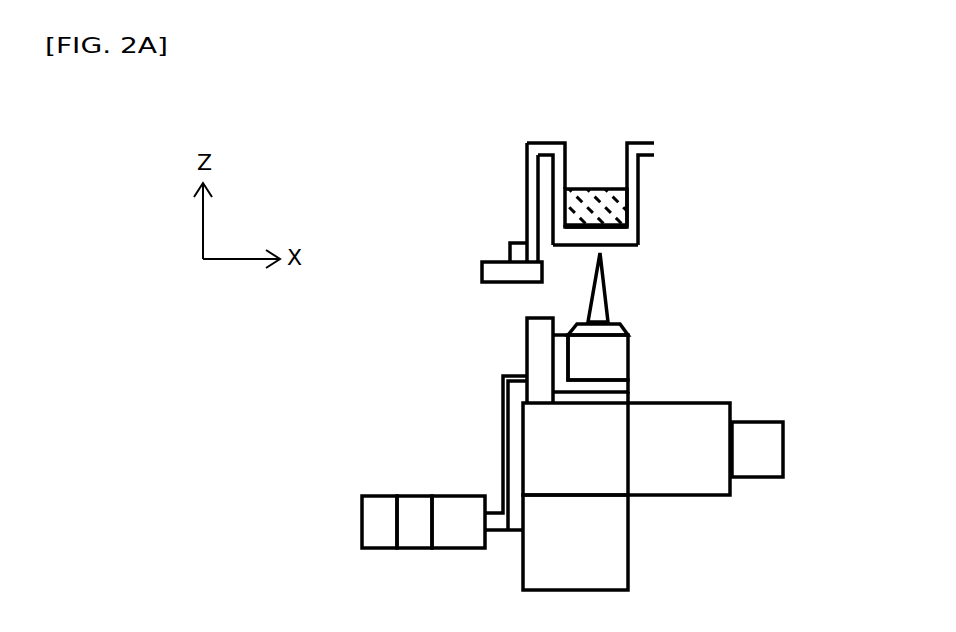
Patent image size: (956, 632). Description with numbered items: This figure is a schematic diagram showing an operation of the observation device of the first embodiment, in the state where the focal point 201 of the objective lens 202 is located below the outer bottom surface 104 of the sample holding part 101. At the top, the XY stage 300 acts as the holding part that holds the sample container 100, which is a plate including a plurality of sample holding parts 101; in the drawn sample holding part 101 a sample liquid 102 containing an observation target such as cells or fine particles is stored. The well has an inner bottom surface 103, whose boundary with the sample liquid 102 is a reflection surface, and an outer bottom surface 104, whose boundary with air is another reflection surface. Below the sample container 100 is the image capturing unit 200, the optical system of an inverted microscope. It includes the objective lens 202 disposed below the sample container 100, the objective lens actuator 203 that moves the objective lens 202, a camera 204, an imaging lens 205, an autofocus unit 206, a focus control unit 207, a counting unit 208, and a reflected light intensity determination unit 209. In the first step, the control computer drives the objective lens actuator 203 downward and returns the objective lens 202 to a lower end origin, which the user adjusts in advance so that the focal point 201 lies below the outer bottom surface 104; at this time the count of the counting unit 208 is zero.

The sample container 100 is at (517, 252).
The sample holding part 101 is at (598, 168).
The sample liquid 102 is at (613, 205).
The inner bottom surface 103 is at (598, 218).
The outer bottom surface 104 is at (597, 238).
The XY stage 300 is at (488, 272).
The image capturing unit 200 is at (436, 406).
The focal point 201 is at (602, 253).
The objective lens 202 is at (617, 353).
The objective lens actuator 203 is at (538, 347).
The camera 204 is at (760, 430).
The imaging lens 205 is at (687, 405).
The autofocus unit 206 is at (618, 567).
The focus control unit 207 is at (457, 503).
The counting unit 208 is at (417, 502).
The reflected light intensity determination unit 209 is at (380, 502).